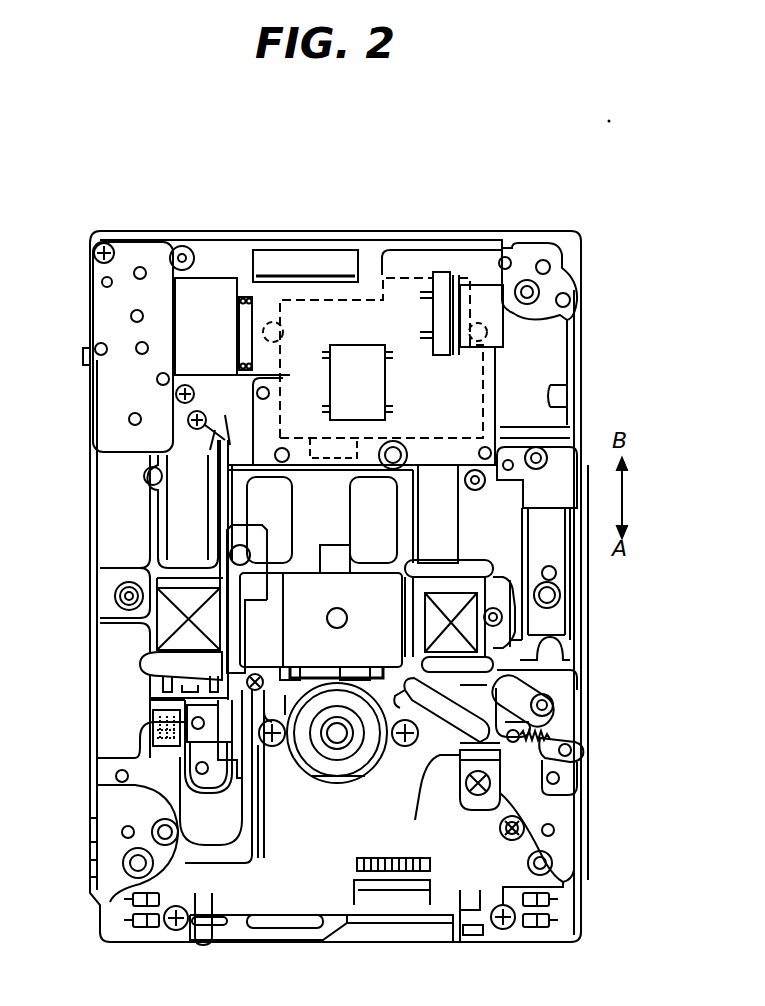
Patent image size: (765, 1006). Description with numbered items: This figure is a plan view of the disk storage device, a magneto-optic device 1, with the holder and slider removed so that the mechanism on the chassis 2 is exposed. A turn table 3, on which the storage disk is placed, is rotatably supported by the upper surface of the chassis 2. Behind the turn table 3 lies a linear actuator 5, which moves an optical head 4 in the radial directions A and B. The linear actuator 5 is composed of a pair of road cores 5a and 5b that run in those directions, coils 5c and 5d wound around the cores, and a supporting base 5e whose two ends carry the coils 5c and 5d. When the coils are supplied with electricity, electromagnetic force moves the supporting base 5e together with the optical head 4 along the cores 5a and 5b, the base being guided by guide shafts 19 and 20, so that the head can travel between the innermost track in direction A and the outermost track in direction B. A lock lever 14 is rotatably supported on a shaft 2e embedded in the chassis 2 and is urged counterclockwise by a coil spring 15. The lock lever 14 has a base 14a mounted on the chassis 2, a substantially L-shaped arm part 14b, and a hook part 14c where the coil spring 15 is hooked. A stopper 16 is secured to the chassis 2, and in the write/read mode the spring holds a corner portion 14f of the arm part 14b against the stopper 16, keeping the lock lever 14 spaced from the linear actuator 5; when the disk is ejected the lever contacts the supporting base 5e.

The magneto-optic device 1 is at (450, 116).
The chassis 2 is at (562, 852).
The shaft 2e is at (555, 705).
The turn table 3 is at (313, 773).
The optical head 4 is at (307, 585).
The linear actuator 5 is at (148, 634).
The road core 5a is at (177, 521).
The road core 5b is at (447, 468).
The coil 5c is at (177, 595).
The coil 5d is at (443, 593).
The supporting base 5e is at (378, 550).
The lock lever 14 is at (432, 740).
The base 14a is at (535, 690).
The arm part 14b is at (386, 768).
The hook part 14c is at (560, 770).
The corner portion 14f is at (492, 770).
The coil spring 15 is at (548, 742).
The stopper 16 is at (440, 758).
The guide shaft 19 is at (226, 760).
The guide shaft 20 is at (508, 510).